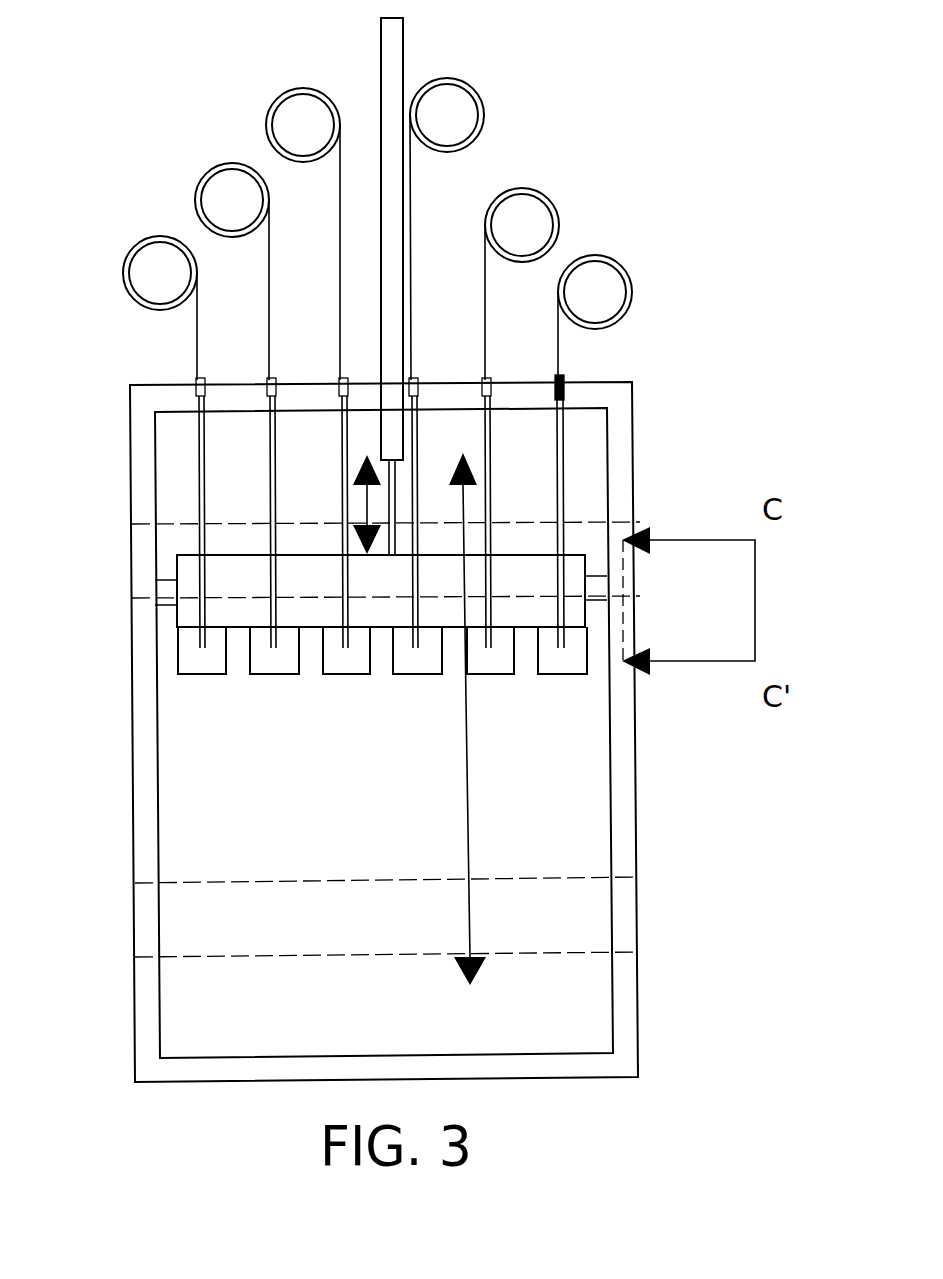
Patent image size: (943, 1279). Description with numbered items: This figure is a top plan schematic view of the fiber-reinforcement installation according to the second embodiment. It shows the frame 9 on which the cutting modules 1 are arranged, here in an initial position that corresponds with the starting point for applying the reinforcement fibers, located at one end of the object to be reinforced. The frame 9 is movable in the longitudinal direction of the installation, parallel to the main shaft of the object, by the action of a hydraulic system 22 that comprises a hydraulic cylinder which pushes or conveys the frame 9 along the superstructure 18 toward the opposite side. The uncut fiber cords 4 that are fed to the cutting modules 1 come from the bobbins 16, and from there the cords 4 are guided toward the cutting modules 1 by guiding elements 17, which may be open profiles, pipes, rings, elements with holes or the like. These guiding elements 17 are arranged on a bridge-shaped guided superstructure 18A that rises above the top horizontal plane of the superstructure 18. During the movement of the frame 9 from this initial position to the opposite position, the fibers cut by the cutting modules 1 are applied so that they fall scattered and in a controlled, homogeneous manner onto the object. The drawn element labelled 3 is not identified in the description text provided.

The cutting module 1 is at (562, 662).
The inner vessel 3 is at (585, 420).
The fiber cord 4 is at (267, 290).
The frame 9 is at (248, 596).
The bobbin 16 is at (303, 125).
The guiding element 17 is at (345, 461).
The superstructure 18 is at (130, 657).
The bridge-shaped guided superstructure 18A is at (568, 917).
The hydraulic system 22 is at (390, 40).